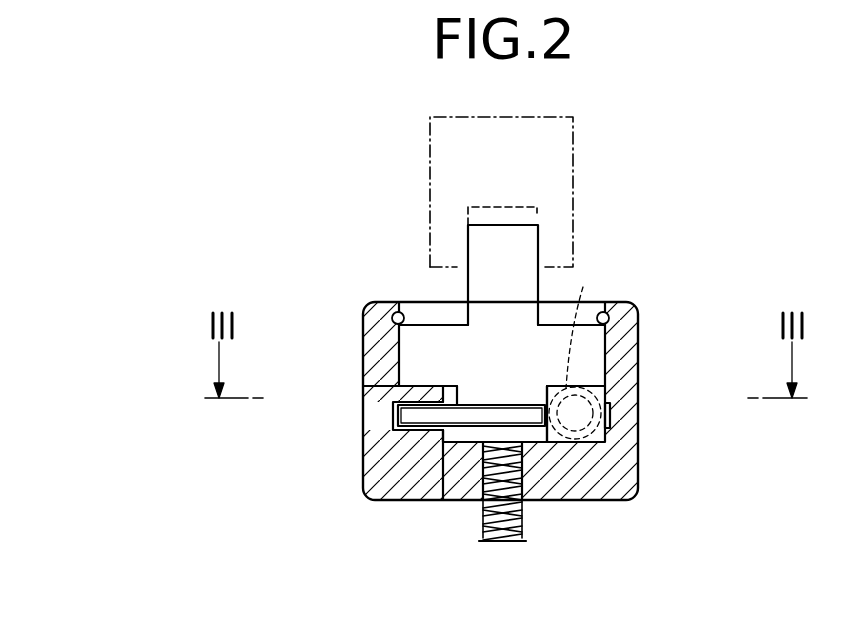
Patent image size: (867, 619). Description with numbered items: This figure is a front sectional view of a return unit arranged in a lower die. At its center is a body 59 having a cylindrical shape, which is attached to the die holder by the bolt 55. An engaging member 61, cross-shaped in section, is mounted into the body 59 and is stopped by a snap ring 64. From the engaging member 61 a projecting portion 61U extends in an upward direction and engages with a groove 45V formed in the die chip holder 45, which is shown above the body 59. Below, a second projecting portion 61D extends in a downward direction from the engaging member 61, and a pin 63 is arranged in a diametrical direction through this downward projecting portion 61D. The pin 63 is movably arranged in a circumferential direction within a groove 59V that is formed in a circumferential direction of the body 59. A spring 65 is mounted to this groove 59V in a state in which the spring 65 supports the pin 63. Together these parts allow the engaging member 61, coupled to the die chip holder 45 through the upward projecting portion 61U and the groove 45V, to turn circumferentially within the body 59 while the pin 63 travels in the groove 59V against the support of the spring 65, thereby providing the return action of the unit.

The die chip holder 45 is at (450, 143).
The groove 45V is at (540, 212).
The bolt 55 is at (480, 477).
The body 59 is at (395, 482).
The groove 59V is at (395, 427).
The engaging member 61 is at (590, 360).
The projecting portion 61U is at (470, 260).
The projecting portion 61D is at (527, 440).
The pin 63 is at (392, 400).
The snap ring 64 is at (397, 314).
The spring 65 is at (592, 320).